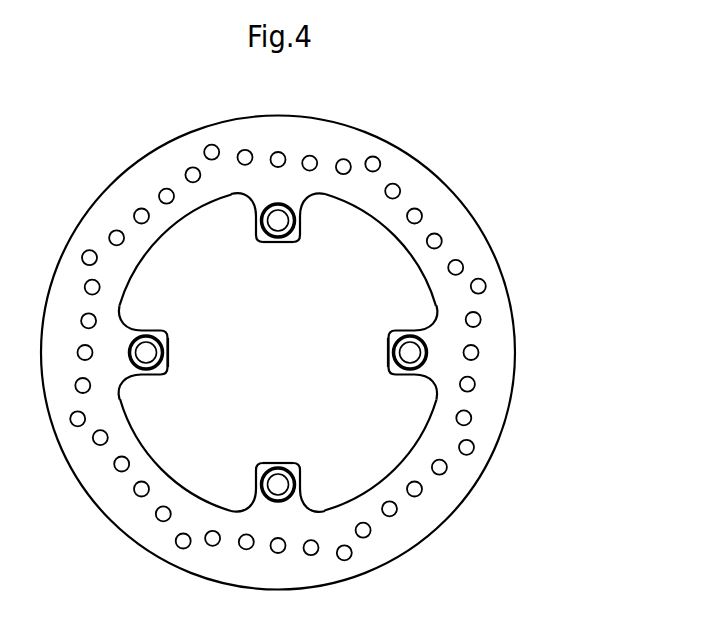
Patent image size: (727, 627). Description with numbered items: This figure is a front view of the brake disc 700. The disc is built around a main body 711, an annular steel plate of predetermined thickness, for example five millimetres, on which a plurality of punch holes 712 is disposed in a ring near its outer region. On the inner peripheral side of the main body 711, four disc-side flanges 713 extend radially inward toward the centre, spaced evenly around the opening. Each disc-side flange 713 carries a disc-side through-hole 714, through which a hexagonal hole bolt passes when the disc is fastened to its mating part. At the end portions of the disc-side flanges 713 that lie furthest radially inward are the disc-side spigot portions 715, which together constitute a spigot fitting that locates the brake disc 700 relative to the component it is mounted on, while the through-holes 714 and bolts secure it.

The brake disc 700 is at (308, 320).
The main body 711 is at (488, 249).
The punch holes 712 is at (374, 164).
The disc-side flanges 713 is at (296, 219).
The disc-side through-holes 714 is at (272, 221).
The disc-side spigot portions 715 is at (278, 243).